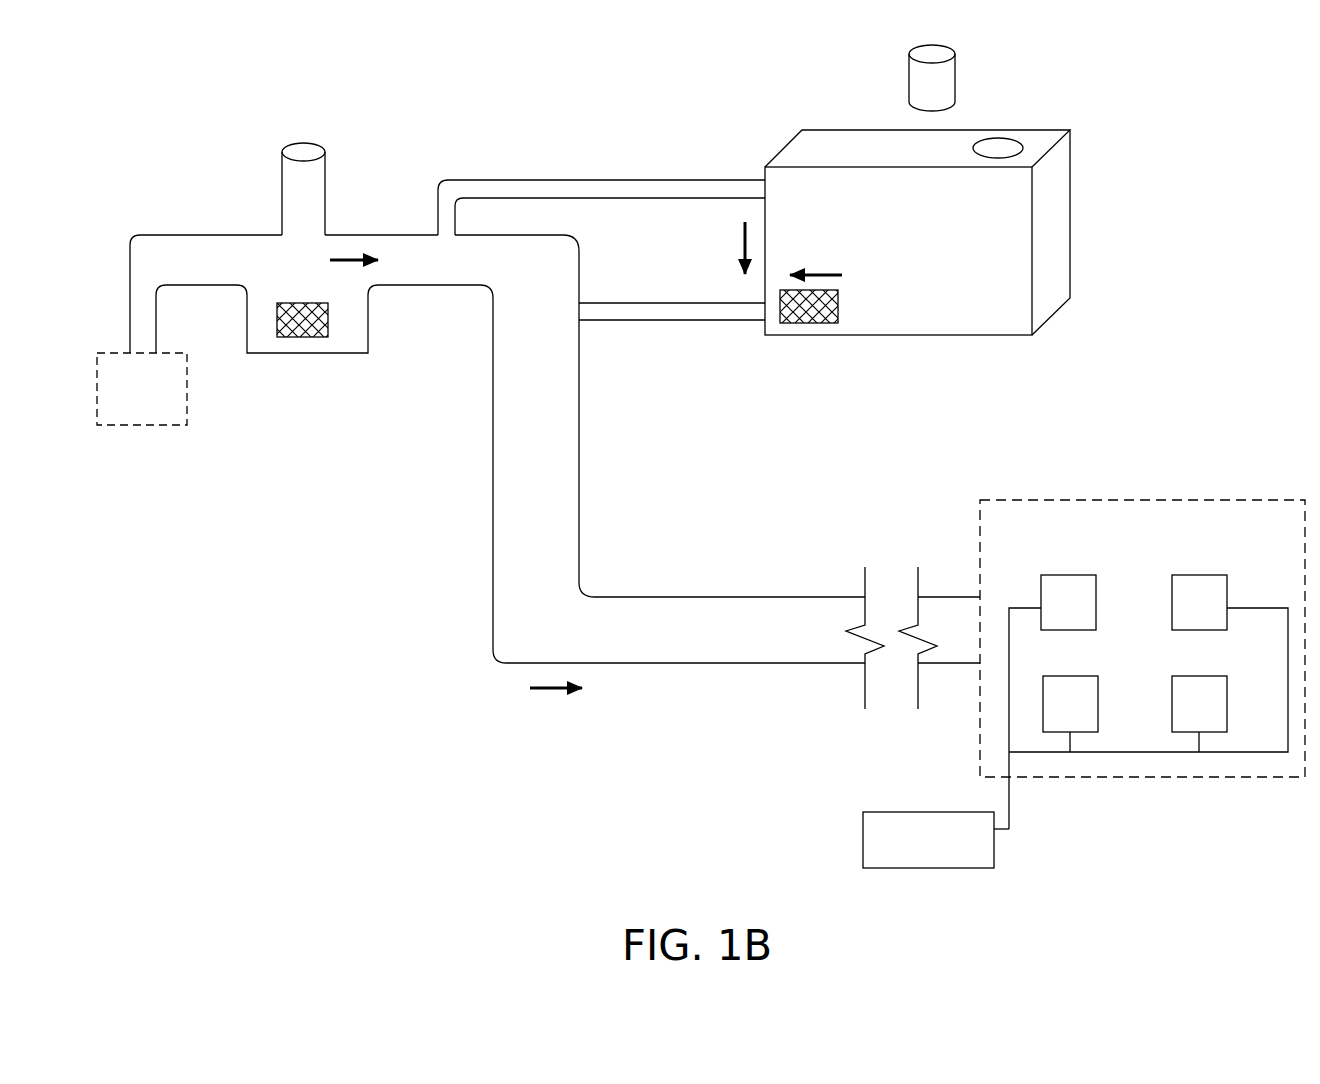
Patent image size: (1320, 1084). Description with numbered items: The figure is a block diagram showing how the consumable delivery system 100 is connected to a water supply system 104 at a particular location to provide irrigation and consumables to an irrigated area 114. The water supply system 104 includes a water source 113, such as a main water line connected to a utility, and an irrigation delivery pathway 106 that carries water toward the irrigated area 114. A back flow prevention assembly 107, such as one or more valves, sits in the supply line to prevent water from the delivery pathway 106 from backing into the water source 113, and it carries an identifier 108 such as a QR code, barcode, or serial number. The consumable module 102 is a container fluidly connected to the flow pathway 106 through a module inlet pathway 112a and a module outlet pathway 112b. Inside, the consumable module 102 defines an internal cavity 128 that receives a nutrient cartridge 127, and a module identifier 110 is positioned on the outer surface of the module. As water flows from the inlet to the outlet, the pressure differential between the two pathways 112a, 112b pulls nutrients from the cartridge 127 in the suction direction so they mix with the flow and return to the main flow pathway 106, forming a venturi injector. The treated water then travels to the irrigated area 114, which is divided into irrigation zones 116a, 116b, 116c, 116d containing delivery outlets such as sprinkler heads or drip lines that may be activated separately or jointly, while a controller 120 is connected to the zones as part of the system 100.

The consumable delivery system 100 is at (1213, 89).
The consumable module 102 is at (1002, 323).
The water supply system 104 is at (473, 470).
The irrigation delivery pathway 106 is at (347, 258).
The back flow prevention assembly 107 is at (368, 325).
The identifier 108 is at (305, 337).
The module identifier 110 is at (815, 323).
The module inlet pathway 112a is at (553, 195).
The module outlet pathway 112b is at (595, 310).
The water source 113 is at (133, 425).
The irrigated area 114 is at (1134, 500).
The irrigation zone 116a is at (1067, 575).
The irrigation zone 116b is at (1197, 575).
The irrigation zone 116c is at (1069, 676).
The irrigation zone 116d is at (1197, 676).
The controller 120 is at (994, 846).
The nutrient cartridge 127 is at (905, 68).
The internal cavity 128 is at (1012, 138).